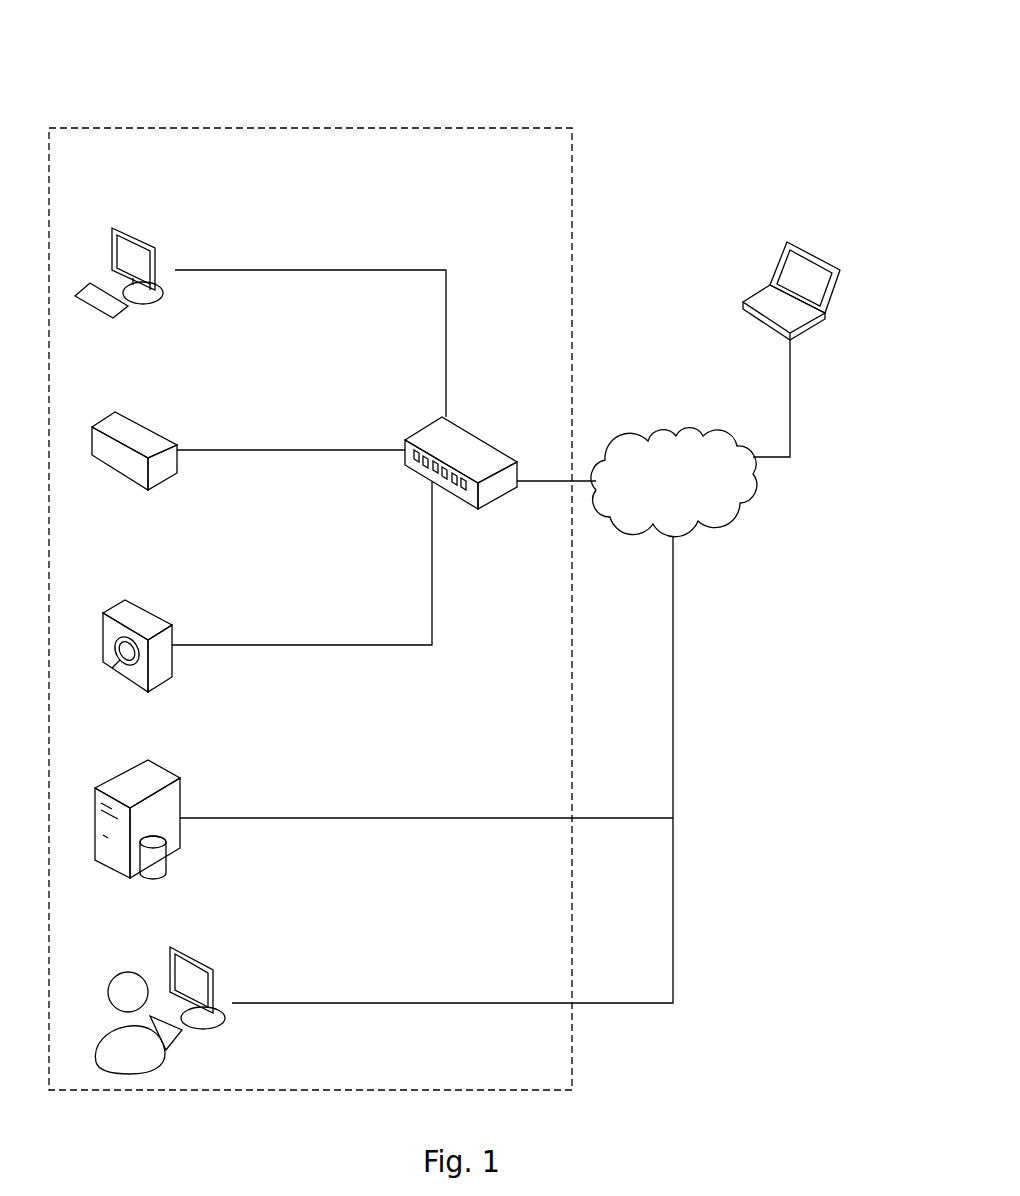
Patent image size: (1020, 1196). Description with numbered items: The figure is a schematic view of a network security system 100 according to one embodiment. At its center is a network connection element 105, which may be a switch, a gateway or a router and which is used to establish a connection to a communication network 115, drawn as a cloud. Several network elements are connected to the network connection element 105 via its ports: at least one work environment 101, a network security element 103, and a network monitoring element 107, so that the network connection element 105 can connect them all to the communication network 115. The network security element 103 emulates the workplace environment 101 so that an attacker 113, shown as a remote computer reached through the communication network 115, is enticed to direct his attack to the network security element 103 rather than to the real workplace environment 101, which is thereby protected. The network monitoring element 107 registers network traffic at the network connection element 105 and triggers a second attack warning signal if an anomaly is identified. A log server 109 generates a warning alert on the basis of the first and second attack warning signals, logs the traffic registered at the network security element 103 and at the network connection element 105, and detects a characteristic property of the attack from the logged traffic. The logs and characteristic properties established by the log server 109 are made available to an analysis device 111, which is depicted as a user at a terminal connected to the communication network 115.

The network security system 100 is at (407, 125).
The work environment 101 is at (156, 236).
The network security element 103 is at (163, 420).
The network connection element 105 is at (478, 429).
The network monitoring element 107 is at (158, 606).
The log server 109 is at (176, 771).
The analysis device 111 is at (208, 952).
The attacker 113 is at (823, 251).
The communication network 115 is at (729, 527).